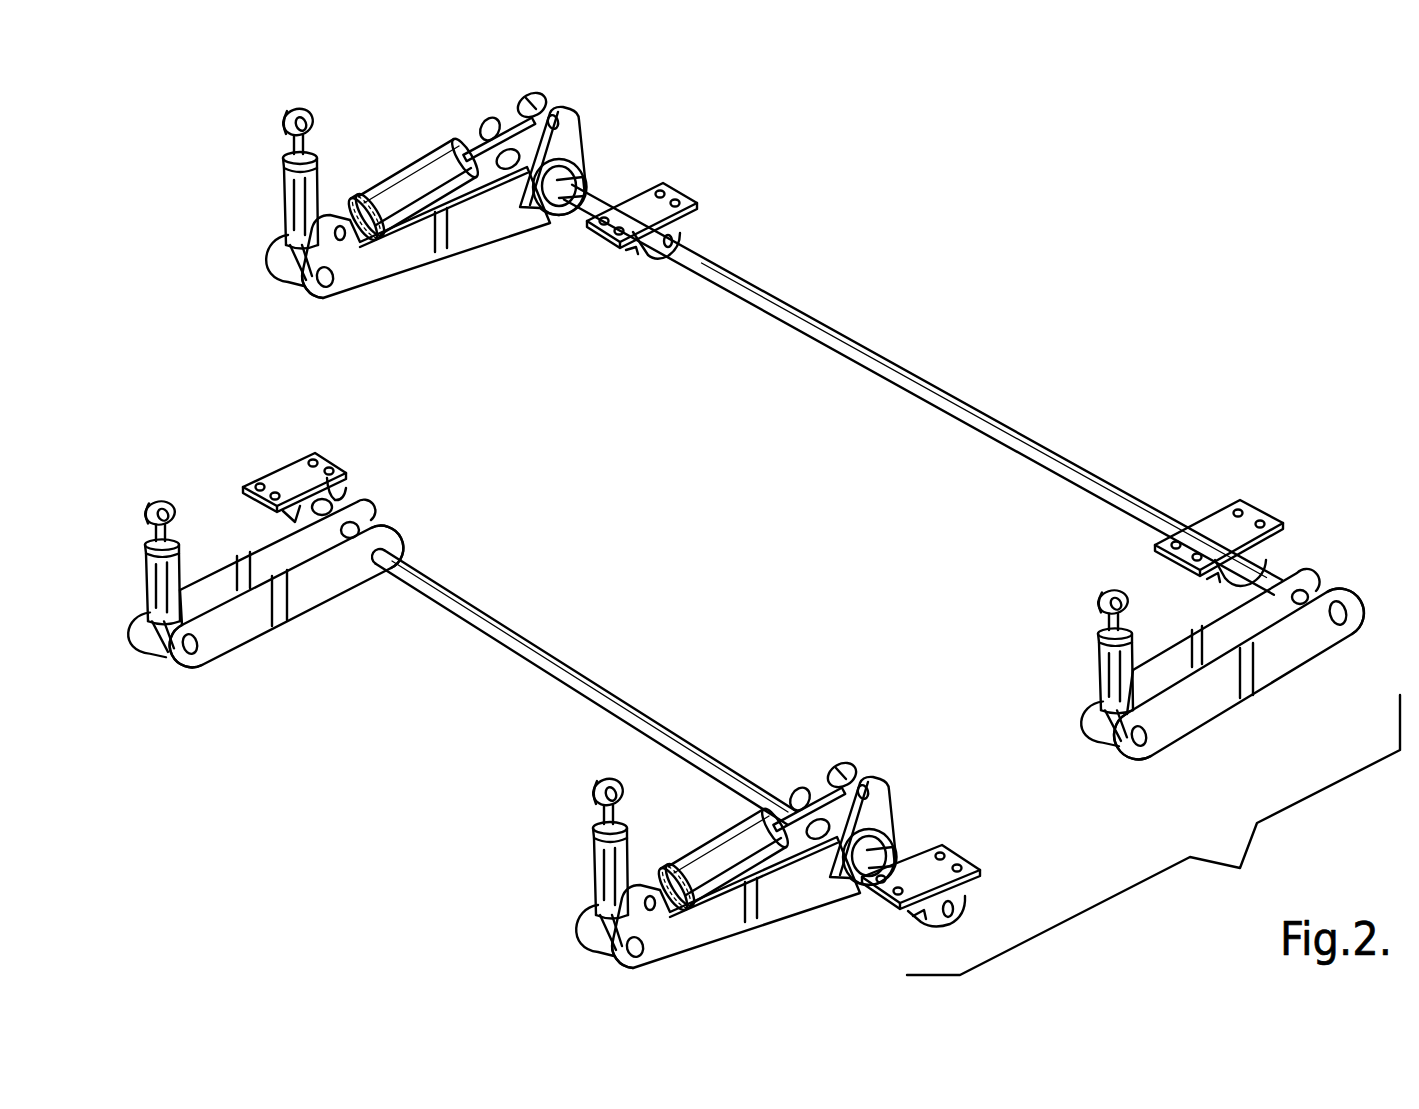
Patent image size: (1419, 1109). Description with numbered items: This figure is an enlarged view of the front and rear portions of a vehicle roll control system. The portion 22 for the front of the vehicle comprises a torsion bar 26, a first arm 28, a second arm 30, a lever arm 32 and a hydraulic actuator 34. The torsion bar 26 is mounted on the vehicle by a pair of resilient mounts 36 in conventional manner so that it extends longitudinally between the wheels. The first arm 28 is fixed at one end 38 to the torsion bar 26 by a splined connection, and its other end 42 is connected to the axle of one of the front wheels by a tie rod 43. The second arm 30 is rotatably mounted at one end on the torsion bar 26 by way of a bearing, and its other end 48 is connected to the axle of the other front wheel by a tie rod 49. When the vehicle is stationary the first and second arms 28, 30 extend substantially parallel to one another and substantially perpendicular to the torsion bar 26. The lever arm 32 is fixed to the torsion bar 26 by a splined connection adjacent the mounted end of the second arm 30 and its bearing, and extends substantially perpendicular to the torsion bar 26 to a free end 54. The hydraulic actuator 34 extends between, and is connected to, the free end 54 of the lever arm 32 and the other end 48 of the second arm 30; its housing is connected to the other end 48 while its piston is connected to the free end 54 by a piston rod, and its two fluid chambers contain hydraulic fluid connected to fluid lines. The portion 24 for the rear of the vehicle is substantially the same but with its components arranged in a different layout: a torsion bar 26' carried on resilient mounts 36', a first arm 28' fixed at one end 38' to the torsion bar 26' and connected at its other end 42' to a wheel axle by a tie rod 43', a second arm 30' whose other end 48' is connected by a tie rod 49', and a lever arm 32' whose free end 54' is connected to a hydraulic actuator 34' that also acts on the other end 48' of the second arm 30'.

The portion of the vehicle roll control system for the front of the vehicle 22 is at (588, 640).
The portion of the vehicle roll control system for the rear of the vehicle 24 is at (945, 352).
The torsion bar 26 is at (584, 687).
The torsion bar 26' is at (923, 390).
The first arm 28 is at (287, 589).
The first arm 28' is at (1250, 664).
The second arm 30 is at (736, 902).
The second arm 30' is at (426, 239).
The lever arm 32 is at (863, 822).
The lever arm 32' is at (564, 158).
The hydraulic actuator 34 is at (749, 849).
The hydraulic actuator 34' is at (439, 162).
The resilient mounts 36 is at (620, 674).
The resilient mounts 36' is at (957, 355).
The one end of the first arm 38 is at (414, 527).
The one end of the first arm 38' is at (1367, 569).
The other end of the first arm 42 is at (188, 676).
The other end of the first arm 42' is at (1188, 753).
The tie rod 43 is at (132, 578).
The tie rod 43' is at (1063, 667).
The other end of the second arm 48 is at (595, 959).
The other end of the second arm 48' is at (322, 317).
The tie rod 49 is at (568, 865).
The tie rod 49' is at (251, 195).
The free end of the lever arm 54 is at (846, 745).
The free end of the lever arm 54' is at (574, 98).